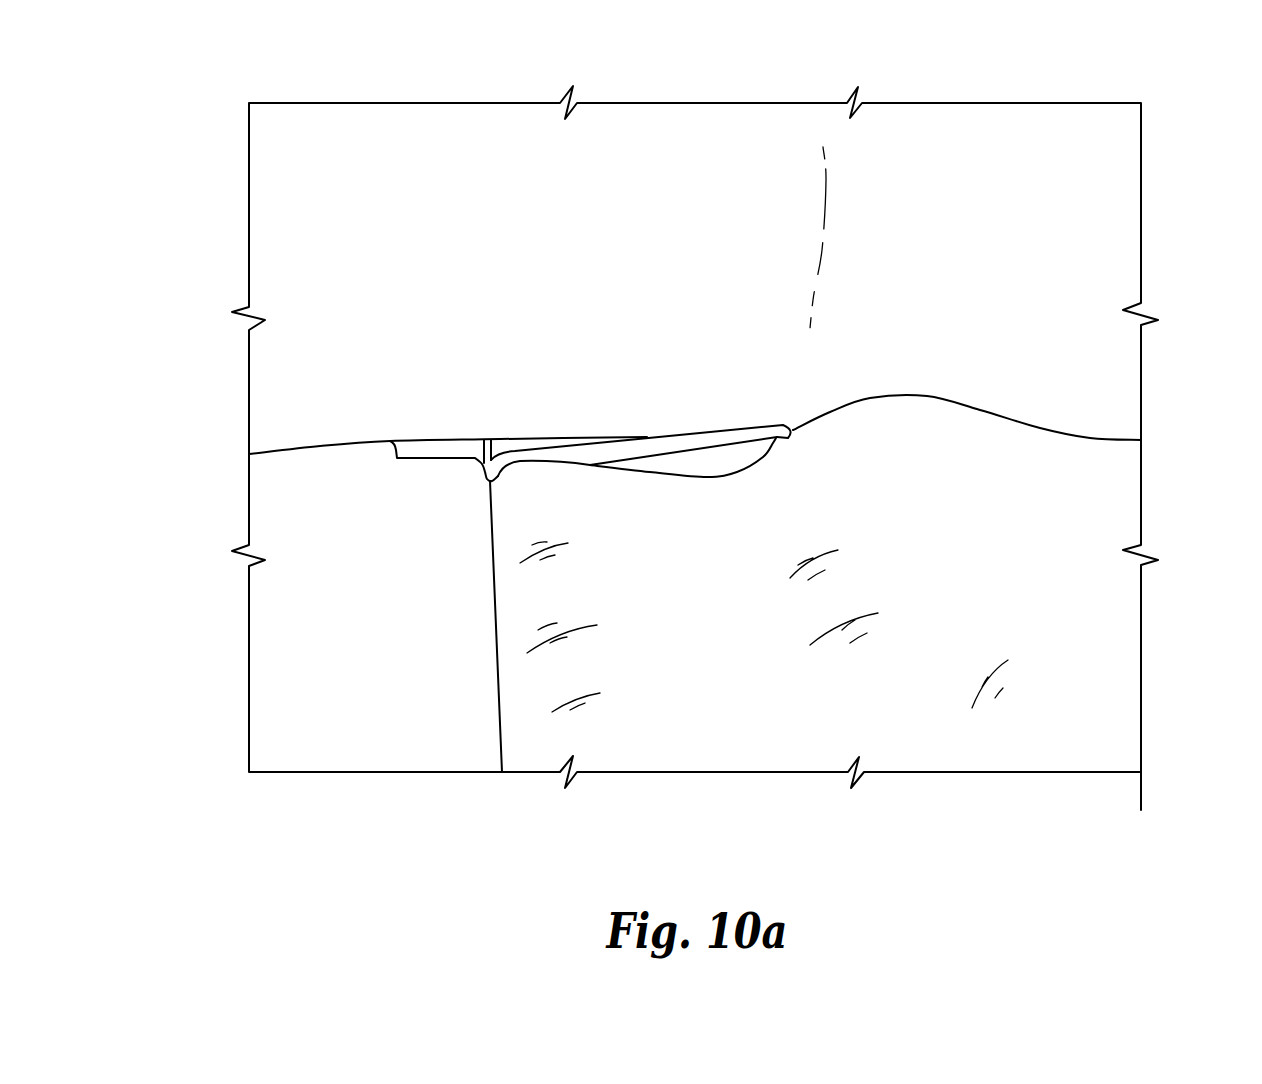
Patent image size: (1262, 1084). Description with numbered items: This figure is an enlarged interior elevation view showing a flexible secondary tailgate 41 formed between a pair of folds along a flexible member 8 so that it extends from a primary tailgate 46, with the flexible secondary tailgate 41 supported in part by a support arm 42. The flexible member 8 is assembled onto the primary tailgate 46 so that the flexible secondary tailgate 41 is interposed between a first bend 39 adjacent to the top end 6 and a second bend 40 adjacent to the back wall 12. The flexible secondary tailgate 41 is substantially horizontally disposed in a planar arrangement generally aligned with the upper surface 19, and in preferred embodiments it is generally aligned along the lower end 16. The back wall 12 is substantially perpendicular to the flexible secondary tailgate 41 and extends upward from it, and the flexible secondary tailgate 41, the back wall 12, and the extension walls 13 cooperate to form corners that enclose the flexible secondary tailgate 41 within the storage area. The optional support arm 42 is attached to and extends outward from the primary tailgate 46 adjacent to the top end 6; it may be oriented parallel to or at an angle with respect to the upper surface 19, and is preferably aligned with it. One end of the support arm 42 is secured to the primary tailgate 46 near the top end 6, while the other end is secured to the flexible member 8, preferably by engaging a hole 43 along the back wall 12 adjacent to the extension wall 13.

The flexible member 8 is at (534, 298).
The lower end 16 is at (513, 438).
The extension wall 13 is at (510, 172).
The support arm 42 is at (723, 438).
The back wall 12 is at (998, 260).
The primary tailgate 46 is at (320, 478).
The hole 43 is at (1141, 440).
The upper surface 19 is at (362, 620).
The top end 6 is at (500, 745).
The first bend 39 is at (523, 677).
The flexible secondary tailgate 41 is at (690, 667).
The second bend 40 is at (910, 710).